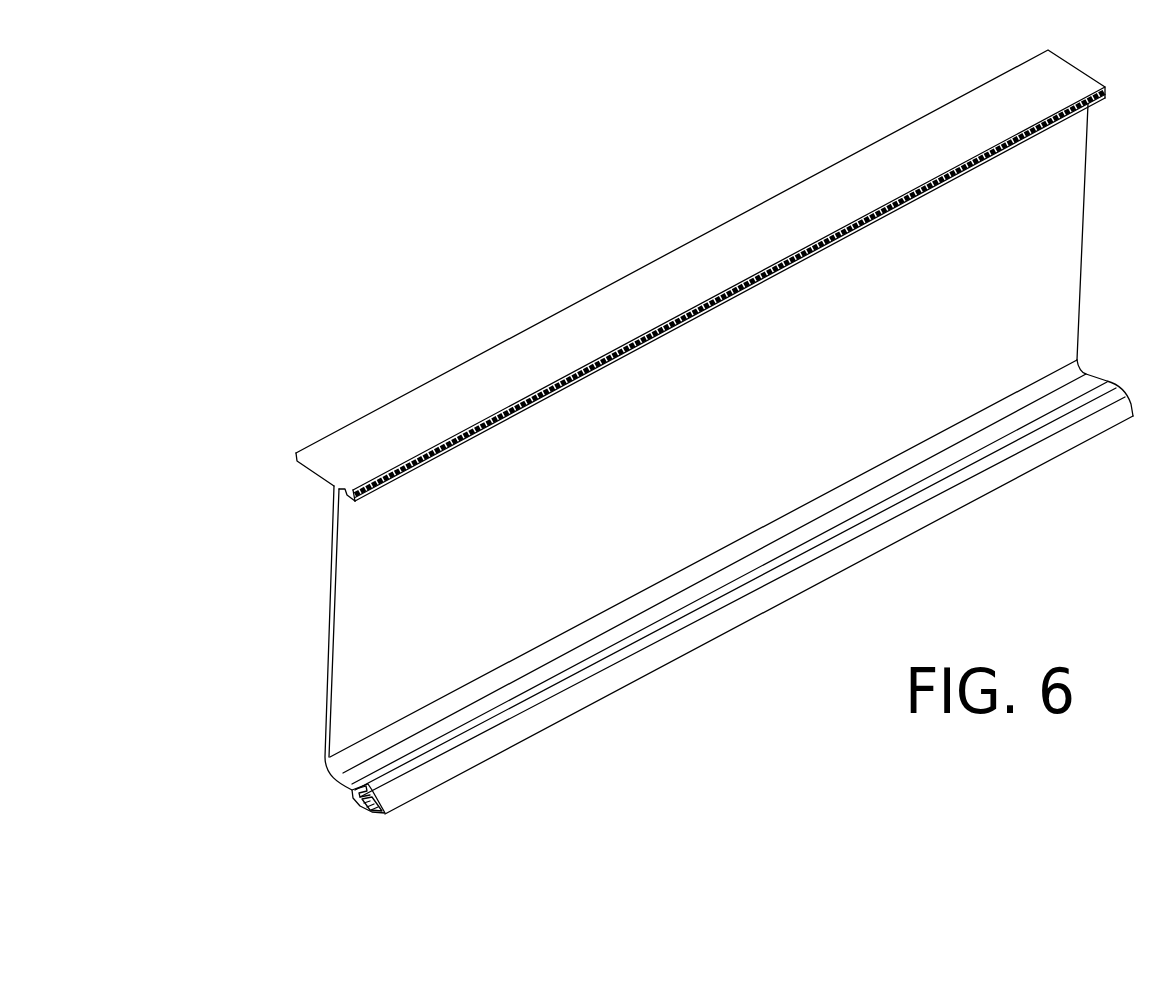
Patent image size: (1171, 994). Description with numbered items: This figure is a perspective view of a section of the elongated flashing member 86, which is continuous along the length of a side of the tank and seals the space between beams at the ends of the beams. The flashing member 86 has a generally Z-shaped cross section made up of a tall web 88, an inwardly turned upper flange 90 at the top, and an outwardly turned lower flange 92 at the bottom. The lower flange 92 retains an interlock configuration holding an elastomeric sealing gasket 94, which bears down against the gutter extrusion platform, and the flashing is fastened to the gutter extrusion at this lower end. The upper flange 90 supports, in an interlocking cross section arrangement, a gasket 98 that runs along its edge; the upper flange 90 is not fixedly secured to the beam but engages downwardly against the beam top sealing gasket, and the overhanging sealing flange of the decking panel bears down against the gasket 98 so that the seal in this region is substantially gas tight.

The flashing member 86 is at (672, 447).
The web 88 is at (333, 603).
The upper flange 90 is at (684, 275).
The lower flange 92 is at (350, 791).
The elastomeric sealing gasket 94 is at (360, 812).
The gasket 98 is at (887, 162).